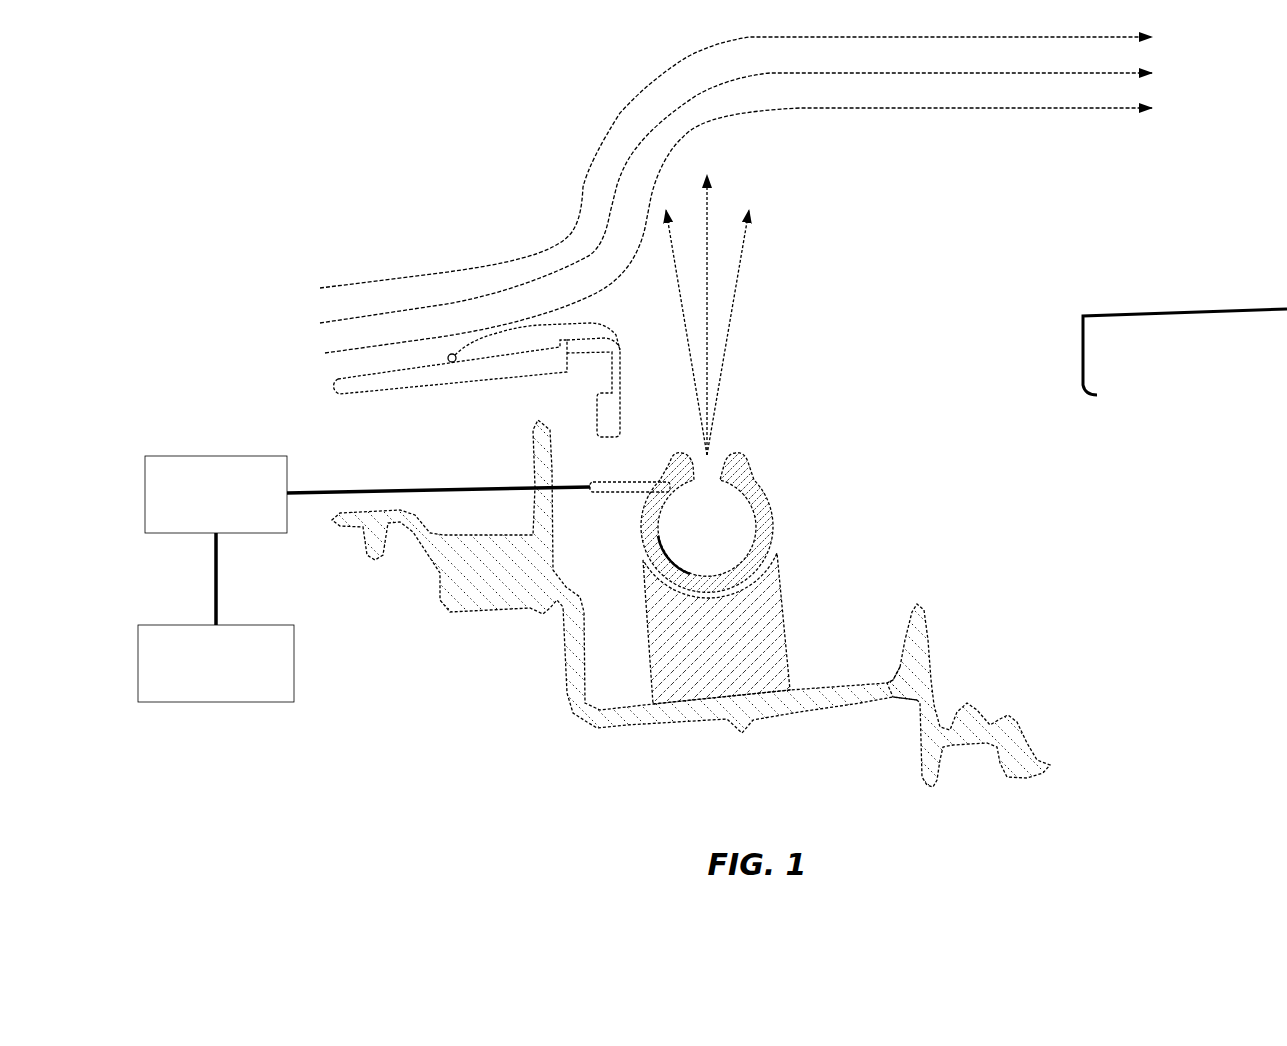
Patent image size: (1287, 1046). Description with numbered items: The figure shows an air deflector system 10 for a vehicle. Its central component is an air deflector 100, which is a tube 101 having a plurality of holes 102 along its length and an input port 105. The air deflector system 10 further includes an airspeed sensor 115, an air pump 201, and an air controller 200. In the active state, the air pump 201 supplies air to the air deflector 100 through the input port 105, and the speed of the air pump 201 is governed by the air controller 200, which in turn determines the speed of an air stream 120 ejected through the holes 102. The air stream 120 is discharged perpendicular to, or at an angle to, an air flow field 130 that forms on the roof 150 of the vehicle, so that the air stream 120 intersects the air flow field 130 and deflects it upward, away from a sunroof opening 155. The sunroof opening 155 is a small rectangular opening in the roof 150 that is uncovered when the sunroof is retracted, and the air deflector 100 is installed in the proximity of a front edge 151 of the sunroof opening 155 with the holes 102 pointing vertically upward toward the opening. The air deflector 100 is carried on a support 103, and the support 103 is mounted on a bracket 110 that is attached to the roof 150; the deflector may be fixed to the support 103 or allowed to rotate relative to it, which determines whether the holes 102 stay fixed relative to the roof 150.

The air deflector system 10 is at (769, 603).
The air deflector 100 is at (745, 506).
The tube 101 is at (770, 478).
The holes 102 is at (713, 462).
The support 103 is at (783, 600).
The input port 105 is at (606, 496).
The bracket 110 is at (931, 633).
The airspeed sensor 115 is at (500, 355).
The air stream 120 is at (723, 406).
The air flow field 130 is at (585, 148).
The roof 150 is at (394, 394).
The front edge 151 is at (624, 372).
The sunroof opening 155 is at (917, 345).
The air controller 200 is at (216, 663).
The air pump 201 is at (216, 540).